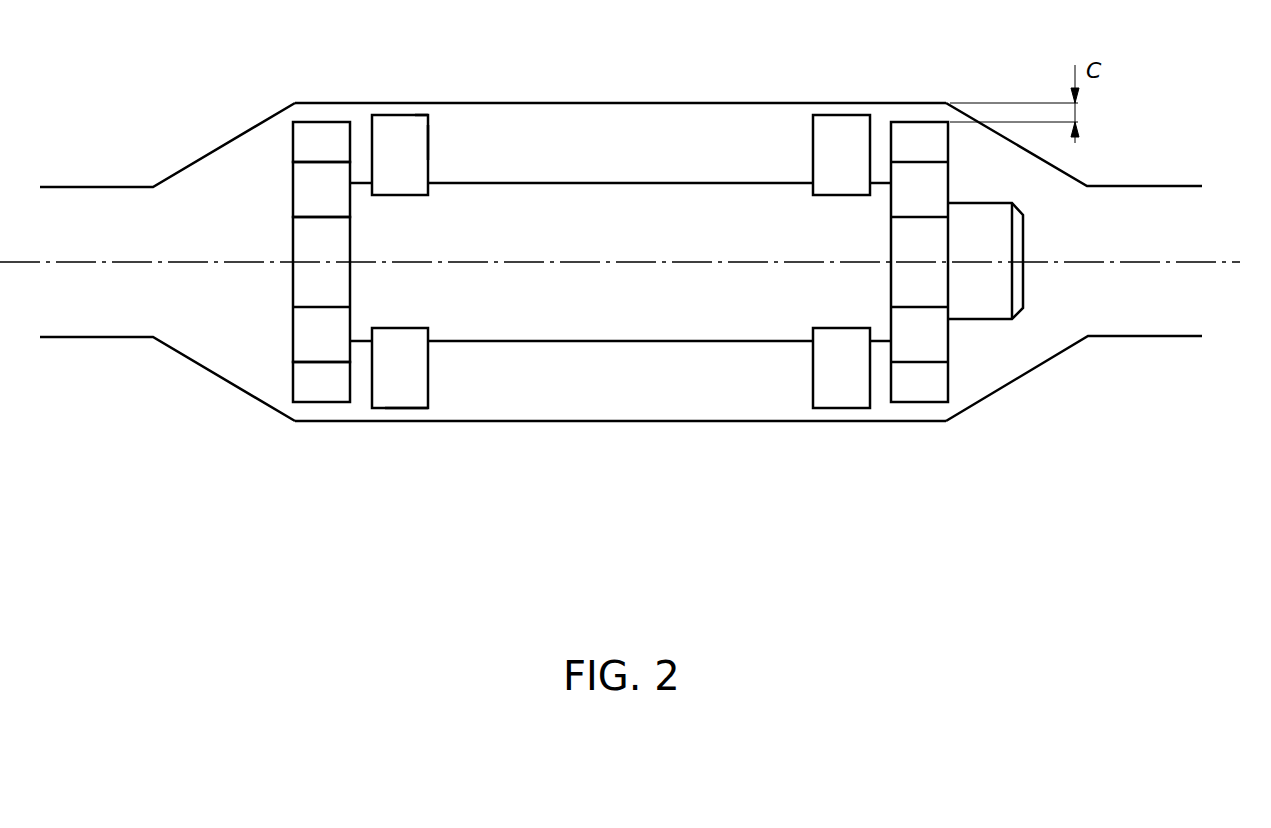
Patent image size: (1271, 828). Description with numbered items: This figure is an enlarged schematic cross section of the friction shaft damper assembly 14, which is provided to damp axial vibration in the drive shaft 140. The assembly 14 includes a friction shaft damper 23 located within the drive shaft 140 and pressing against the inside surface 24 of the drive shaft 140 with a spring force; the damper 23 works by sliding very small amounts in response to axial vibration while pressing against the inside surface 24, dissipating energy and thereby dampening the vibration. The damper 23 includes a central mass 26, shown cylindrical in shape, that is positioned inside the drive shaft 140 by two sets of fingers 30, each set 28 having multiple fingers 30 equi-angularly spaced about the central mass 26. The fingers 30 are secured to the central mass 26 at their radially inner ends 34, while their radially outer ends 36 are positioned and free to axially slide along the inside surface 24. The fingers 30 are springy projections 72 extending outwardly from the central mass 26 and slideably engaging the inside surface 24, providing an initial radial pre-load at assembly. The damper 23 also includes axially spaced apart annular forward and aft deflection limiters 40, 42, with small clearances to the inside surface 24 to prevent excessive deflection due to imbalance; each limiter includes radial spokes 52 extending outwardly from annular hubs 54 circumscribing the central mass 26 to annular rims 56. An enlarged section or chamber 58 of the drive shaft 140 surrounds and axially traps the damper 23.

The friction shaft damper assembly 14 is at (337, 569).
The friction shaft damper 23 is at (697, 341).
The inside surface 24 is at (644, 103).
The central mass 26 is at (548, 182).
The set 28 is at (430, 143).
The fingers 30 is at (400, 136).
The radially inner ends 34 is at (410, 327).
The radially outer ends 36 is at (398, 410).
The forward deflection limiter 40 is at (305, 143).
The aft deflection limiter 42 is at (950, 143).
The radial spokes 52 is at (300, 190).
The annular hubs 54 is at (295, 287).
The annular rims 56 is at (305, 378).
The enlarged section or chamber 58 is at (697, 421).
The springy projections 72 is at (424, 115).
The drive shaft 140 is at (1138, 337).